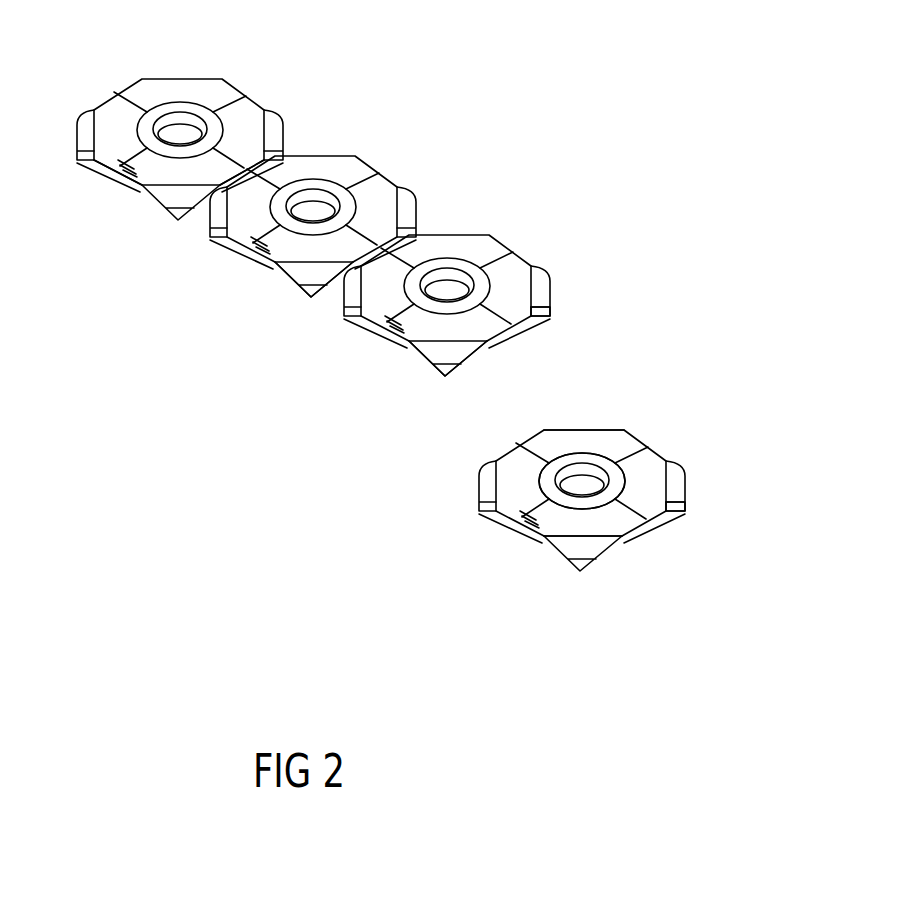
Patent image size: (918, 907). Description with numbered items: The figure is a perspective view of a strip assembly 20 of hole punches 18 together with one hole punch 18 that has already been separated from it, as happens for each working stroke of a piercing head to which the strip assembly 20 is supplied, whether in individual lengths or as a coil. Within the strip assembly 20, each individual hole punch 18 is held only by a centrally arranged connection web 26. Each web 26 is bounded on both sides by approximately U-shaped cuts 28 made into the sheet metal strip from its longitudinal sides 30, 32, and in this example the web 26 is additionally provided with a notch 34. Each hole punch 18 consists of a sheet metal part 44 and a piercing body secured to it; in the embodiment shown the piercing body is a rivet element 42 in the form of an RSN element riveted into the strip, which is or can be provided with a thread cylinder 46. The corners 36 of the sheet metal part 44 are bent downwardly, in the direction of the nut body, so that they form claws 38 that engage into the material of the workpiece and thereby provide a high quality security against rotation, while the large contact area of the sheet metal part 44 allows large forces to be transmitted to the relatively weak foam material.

The hole punch 18 is at (680, 468).
The strip assembly 20 is at (474, 237).
The connection web 26 is at (529, 318).
The U-shaped cut 28 is at (262, 162).
The longitudinal side 30 is at (132, 167).
The longitudinal side 32 is at (220, 110).
The notch 34 is at (240, 177).
The corner 36 is at (218, 278).
The claw 38 is at (445, 378).
The rivet element 42 is at (560, 503).
The sheet metal part 44 is at (625, 433).
The thread cylinder 46 is at (627, 536).